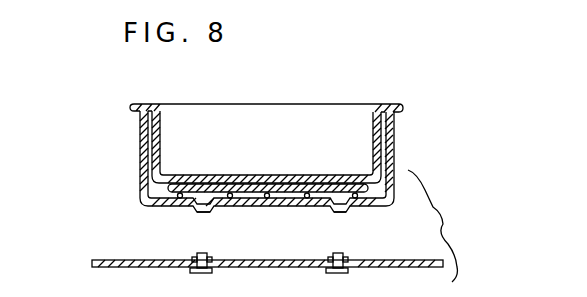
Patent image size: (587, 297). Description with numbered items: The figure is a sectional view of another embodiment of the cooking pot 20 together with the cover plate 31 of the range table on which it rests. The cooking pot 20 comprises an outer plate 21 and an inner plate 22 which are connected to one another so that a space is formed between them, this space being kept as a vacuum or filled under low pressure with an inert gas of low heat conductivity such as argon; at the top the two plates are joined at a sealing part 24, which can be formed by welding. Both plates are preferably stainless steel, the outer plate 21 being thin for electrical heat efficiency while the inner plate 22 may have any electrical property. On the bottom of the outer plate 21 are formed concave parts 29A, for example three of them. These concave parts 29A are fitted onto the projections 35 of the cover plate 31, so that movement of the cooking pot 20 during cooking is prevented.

The cooking pot 20 is at (259, 98).
The outer plate 21 is at (140, 143).
The inner plate 22 is at (164, 141).
The sealing part 24 is at (402, 108).
The concave parts 29A is at (203, 207).
The cover plate 31 is at (394, 260).
The projections 35 is at (208, 253).